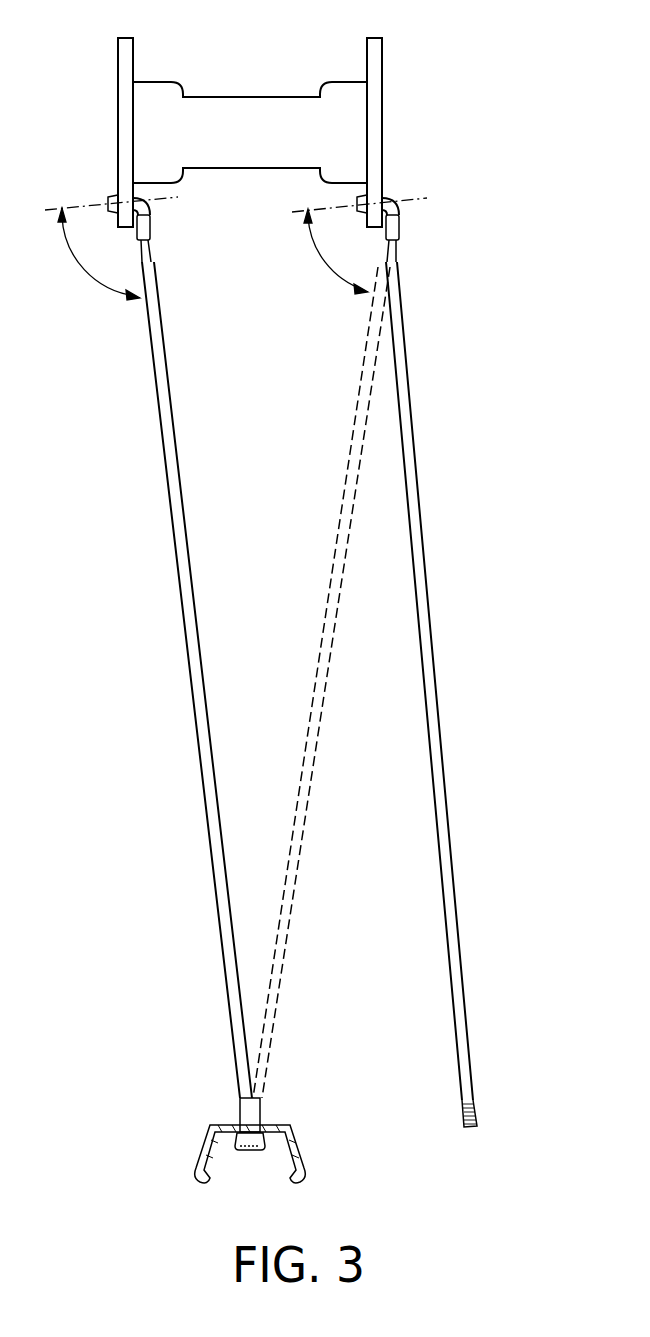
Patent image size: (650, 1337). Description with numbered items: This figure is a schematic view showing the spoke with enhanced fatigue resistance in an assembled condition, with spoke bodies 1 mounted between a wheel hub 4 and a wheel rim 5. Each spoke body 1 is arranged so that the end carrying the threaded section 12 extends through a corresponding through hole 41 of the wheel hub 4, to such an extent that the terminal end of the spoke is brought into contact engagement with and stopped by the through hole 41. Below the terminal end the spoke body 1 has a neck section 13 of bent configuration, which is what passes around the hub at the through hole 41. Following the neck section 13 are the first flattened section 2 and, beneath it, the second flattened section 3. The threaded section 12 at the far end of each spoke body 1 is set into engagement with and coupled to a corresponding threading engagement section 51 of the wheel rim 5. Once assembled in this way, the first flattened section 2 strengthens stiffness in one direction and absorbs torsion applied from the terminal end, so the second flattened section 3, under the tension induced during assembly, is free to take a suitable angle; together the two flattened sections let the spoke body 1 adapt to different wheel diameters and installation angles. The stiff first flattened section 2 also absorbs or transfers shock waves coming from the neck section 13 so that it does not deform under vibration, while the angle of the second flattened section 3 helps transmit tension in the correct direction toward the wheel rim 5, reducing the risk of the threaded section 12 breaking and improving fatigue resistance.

The spoke body 1 is at (185, 610).
The threaded section 12 is at (477, 1111).
The neck section 13 is at (397, 202).
The first flattened section 2 is at (400, 228).
The second flattened section 3 is at (399, 258).
The wheel hub 4 is at (256, 106).
The through hole 41 is at (384, 194).
The wheel rim 5 is at (203, 1155).
The threading engagement section 51 is at (246, 1110).